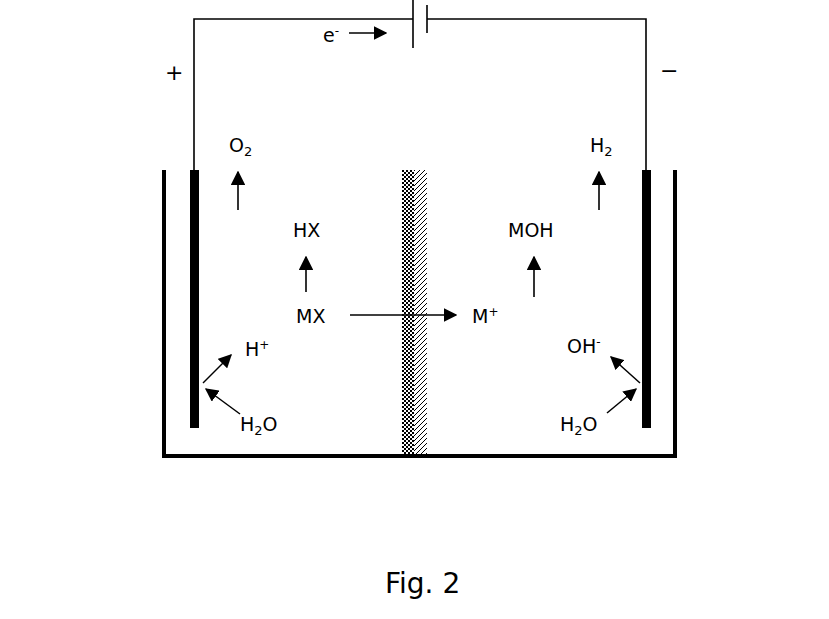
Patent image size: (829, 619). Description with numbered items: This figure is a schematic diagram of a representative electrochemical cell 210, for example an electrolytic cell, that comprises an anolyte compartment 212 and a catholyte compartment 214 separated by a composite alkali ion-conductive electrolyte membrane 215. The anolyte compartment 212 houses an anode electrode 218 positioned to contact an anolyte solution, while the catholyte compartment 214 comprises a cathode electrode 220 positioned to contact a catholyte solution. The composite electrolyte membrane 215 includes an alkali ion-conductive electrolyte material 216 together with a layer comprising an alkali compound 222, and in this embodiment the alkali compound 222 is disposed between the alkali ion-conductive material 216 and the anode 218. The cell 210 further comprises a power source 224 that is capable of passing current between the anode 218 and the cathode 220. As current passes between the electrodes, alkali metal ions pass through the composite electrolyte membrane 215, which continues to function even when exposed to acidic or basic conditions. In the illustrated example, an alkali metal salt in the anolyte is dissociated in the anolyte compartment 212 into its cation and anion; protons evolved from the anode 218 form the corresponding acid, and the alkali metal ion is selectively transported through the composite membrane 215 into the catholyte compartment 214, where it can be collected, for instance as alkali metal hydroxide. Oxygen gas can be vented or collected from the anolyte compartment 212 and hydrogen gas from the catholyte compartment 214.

The electrochemical cell 210 is at (114, 213).
The anolyte compartment 212 is at (373, 397).
The catholyte compartment 214 is at (503, 397).
The composite alkali ion-conductive electrolyte membrane 215 is at (404, 325).
The alkali ion-conductive electrolyte material 216 is at (426, 413).
The anode electrode 218 is at (192, 345).
The cathode electrode 220 is at (649, 345).
The layer comprising an alkali compound 222 is at (402, 428).
The power source 224 is at (428, 29).